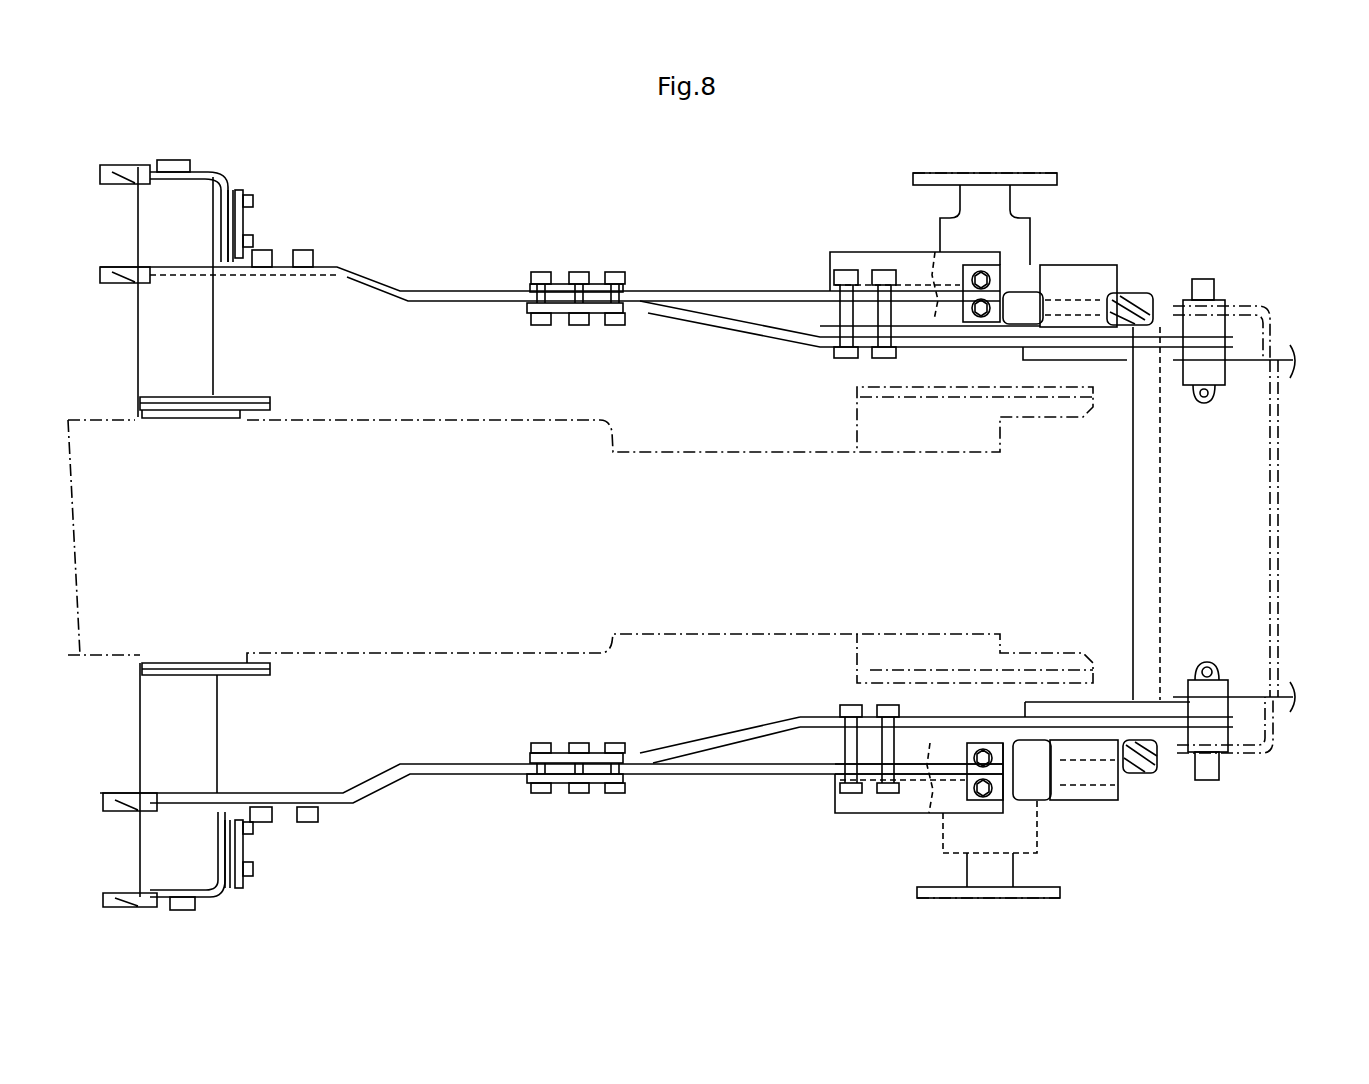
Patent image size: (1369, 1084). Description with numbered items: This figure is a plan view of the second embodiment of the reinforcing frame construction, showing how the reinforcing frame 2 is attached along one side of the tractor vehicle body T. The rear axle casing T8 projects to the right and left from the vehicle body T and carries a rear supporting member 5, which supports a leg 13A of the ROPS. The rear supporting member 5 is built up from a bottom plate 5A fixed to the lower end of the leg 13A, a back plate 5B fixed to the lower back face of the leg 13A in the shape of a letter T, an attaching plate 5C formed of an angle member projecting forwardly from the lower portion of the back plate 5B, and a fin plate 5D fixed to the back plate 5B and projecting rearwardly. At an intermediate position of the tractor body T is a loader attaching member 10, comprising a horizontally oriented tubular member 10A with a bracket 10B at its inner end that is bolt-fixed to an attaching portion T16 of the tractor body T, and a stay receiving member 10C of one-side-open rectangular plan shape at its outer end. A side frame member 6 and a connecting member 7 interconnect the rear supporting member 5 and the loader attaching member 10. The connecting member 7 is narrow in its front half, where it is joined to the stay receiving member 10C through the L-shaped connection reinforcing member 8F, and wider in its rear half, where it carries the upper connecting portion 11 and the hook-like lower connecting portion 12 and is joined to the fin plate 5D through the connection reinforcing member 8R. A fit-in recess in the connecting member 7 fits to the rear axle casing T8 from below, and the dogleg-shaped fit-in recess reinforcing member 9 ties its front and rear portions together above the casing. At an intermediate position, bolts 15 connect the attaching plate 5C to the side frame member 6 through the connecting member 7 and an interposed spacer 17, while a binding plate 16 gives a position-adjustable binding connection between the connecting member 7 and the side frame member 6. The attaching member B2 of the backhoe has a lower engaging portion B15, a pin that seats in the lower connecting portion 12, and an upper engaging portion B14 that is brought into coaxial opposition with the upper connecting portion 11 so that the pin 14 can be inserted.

The reinforcing frame 2 is at (688, 256).
The rear supporting member 5 is at (861, 228).
The bottom plate 5A is at (1047, 800).
The back plate 5B is at (1123, 793).
The attaching plate 5C is at (907, 803).
The fin plate 5D is at (1083, 780).
The side frame member 6 is at (437, 776).
The connecting member 7 is at (680, 750).
The connection reinforcing member 8F is at (240, 222).
The connection reinforcing member 8R is at (1095, 750).
The fit-in recess reinforcing member 9 is at (950, 726).
The loader attaching member 10 is at (249, 309).
The tubular member 10A is at (200, 347).
The bracket 10B is at (252, 396).
The stay receiving member 10C is at (227, 183).
The upper connecting portion 11 is at (1163, 325).
The lower connecting portion 12 is at (1122, 352).
The leg 13A is at (1143, 297).
The pin 14 is at (1230, 675).
The bolts 15 is at (882, 708).
The binding plate 16 is at (563, 785).
The spacer 17 is at (838, 728).
The attaching member B2 is at (1293, 327).
The upper engaging portion B14 is at (1243, 303).
The lower engaging portion B15 is at (1153, 452).
The tractor vehicle body T is at (658, 450).
The attaching portion T16 is at (210, 413).
The rear axle casing T8 is at (1020, 825).